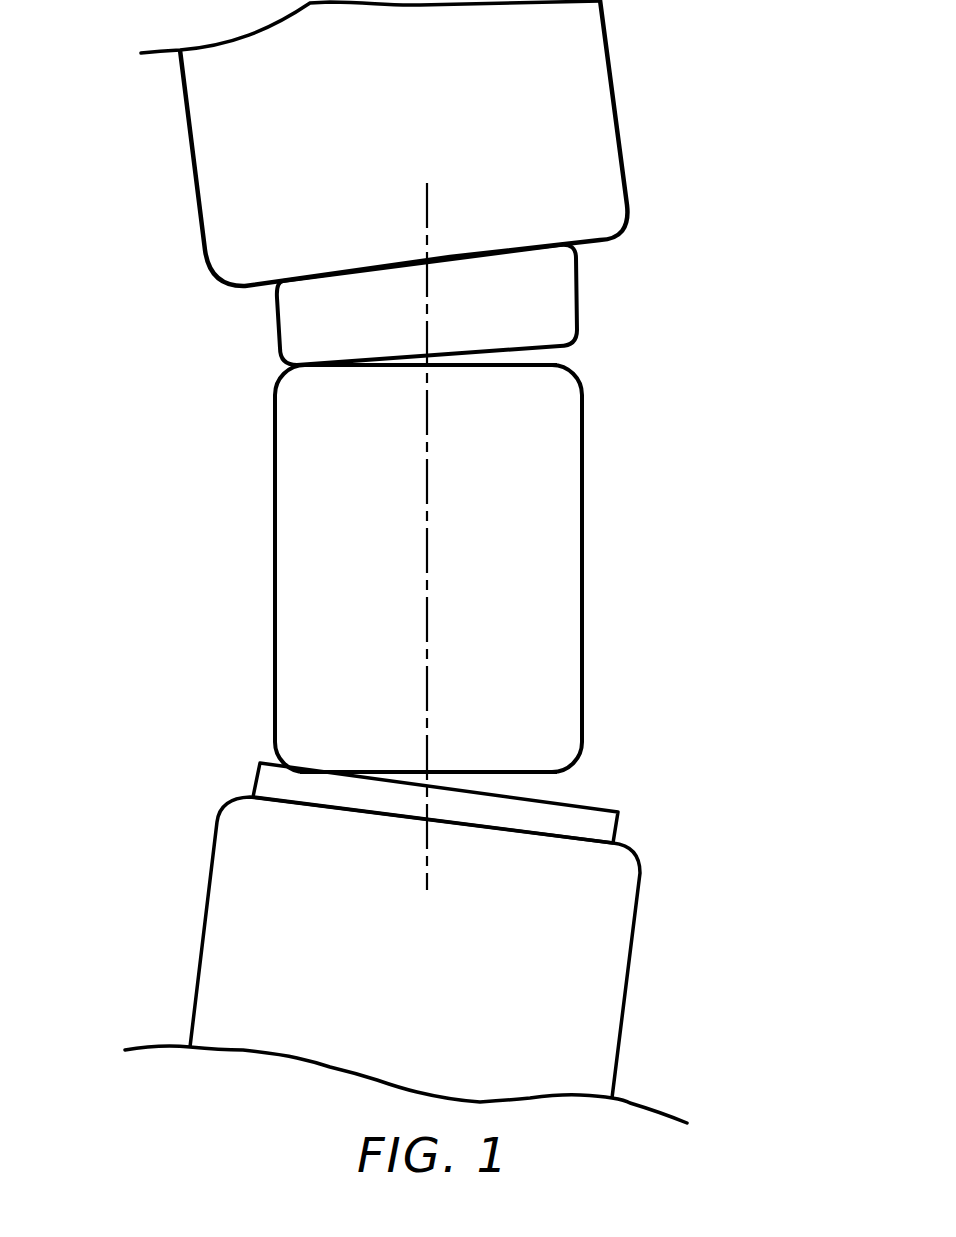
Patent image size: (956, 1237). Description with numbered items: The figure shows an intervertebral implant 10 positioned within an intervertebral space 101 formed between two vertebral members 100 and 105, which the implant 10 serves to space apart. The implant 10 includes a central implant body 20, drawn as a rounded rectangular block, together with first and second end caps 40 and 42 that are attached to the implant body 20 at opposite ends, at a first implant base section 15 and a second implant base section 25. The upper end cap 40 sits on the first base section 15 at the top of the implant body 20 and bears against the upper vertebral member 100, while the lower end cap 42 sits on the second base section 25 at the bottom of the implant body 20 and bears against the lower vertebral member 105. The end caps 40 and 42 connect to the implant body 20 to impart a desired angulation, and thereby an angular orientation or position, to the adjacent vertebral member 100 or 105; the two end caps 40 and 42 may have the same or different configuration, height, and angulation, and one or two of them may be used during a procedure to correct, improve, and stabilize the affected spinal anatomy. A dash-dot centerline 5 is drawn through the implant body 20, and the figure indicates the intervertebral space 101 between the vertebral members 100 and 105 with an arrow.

The vertebral member 100 is at (617, 95).
The vertebral member 105 is at (627, 990).
The longitudinal axis 5 is at (427, 493).
The implant 10 is at (480, 553).
The end cap 40 is at (578, 290).
The implant body 20 is at (582, 568).
The first implant base section 15 is at (300, 387).
The second implant base section 25 is at (300, 748).
The end cap 42 is at (618, 828).
The intervertebral space 101 is at (588, 784).